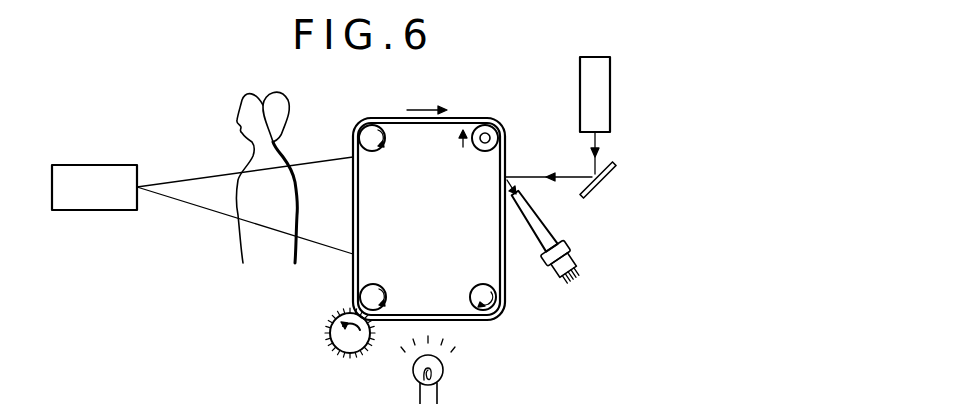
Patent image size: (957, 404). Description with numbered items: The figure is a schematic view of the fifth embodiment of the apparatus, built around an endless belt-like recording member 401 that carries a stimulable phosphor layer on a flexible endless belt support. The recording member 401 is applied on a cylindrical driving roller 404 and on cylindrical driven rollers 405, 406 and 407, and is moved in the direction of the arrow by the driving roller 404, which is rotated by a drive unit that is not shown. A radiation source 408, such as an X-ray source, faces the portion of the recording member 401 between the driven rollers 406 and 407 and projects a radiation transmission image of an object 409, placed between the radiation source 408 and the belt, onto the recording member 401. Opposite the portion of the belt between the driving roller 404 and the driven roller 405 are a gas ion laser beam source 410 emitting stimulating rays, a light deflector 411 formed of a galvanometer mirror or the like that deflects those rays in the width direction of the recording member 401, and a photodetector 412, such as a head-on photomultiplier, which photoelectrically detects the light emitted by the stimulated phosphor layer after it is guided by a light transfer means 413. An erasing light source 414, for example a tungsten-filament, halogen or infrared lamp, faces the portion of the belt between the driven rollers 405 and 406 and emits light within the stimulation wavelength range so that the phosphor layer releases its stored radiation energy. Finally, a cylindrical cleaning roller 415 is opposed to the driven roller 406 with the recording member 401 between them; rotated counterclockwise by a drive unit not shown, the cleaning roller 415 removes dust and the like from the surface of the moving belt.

The endless belt-like recording member 401 is at (465, 117).
The cylindrical driving roller 404 is at (480, 151).
The cylindrical driven roller 405 is at (480, 285).
The cylindrical driven roller 406 is at (370, 286).
The cylindrical driven roller 407 is at (372, 152).
The radiation source 408 is at (115, 210).
The object 409 is at (288, 107).
The gas ion laser beam source 410 is at (610, 95).
The light deflector 411 is at (608, 175).
The photodetector 412 is at (578, 263).
The light transfer means 413 is at (553, 223).
The erasing light source 414 is at (443, 367).
The cleaning roller 415 is at (355, 355).